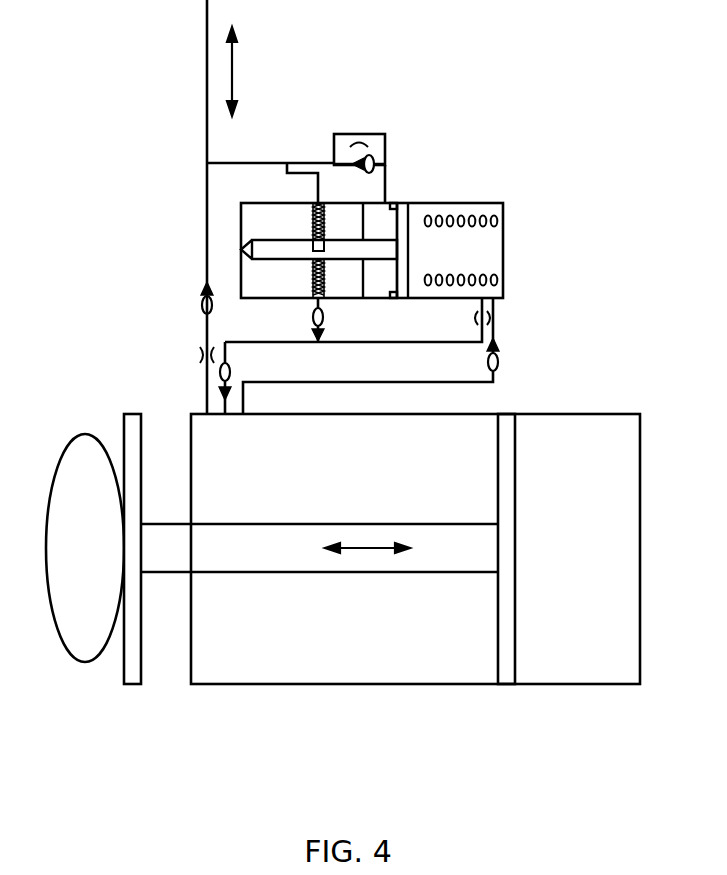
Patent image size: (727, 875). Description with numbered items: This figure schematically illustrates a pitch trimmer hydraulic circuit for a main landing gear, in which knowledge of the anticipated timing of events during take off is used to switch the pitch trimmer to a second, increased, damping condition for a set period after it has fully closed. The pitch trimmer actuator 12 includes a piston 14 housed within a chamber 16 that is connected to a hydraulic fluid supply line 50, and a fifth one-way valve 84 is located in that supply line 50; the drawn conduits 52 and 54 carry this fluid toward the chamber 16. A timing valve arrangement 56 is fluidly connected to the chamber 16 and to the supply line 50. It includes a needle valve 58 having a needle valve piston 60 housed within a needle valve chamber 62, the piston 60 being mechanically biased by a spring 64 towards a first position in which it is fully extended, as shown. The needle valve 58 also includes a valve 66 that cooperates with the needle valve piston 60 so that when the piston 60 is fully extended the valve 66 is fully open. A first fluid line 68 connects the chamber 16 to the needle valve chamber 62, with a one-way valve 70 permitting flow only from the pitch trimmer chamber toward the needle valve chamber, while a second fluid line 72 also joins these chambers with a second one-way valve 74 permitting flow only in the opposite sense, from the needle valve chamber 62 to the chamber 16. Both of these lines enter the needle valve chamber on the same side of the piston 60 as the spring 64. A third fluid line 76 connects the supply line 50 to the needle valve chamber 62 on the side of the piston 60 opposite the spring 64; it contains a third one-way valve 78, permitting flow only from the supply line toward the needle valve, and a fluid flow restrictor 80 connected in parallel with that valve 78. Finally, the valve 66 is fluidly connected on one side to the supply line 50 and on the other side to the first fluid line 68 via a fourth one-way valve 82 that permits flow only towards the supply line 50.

The pitch trimmer actuator 12 is at (273, 725).
The piston 14 is at (482, 548).
The chamber 16 is at (413, 661).
The hydraulic fluid supply line 50 is at (207, 63).
The supply conduit 52 is at (206, 410).
The conduit to cylinder 54 is at (225, 414).
The timing valve arrangement 56 is at (445, 203).
The needle valve 58 is at (345, 252).
The needle valve piston 60 is at (403, 248).
The needle valve chamber 62 is at (493, 261).
The spring 64 is at (497, 221).
The valve 66 is at (313, 243).
The first fluid line 68 is at (337, 345).
The one-way valve 70 is at (232, 372).
The second fluid line 72 is at (430, 382).
The second one-way valve 74 is at (500, 363).
The third fluid line 76 is at (265, 163).
The third one-way valve 78 is at (375, 160).
The fluid flow restrictor 80 is at (364, 123).
The fourth one-way valve 82 is at (312, 320).
The fifth one-way valve 84 is at (202, 302).